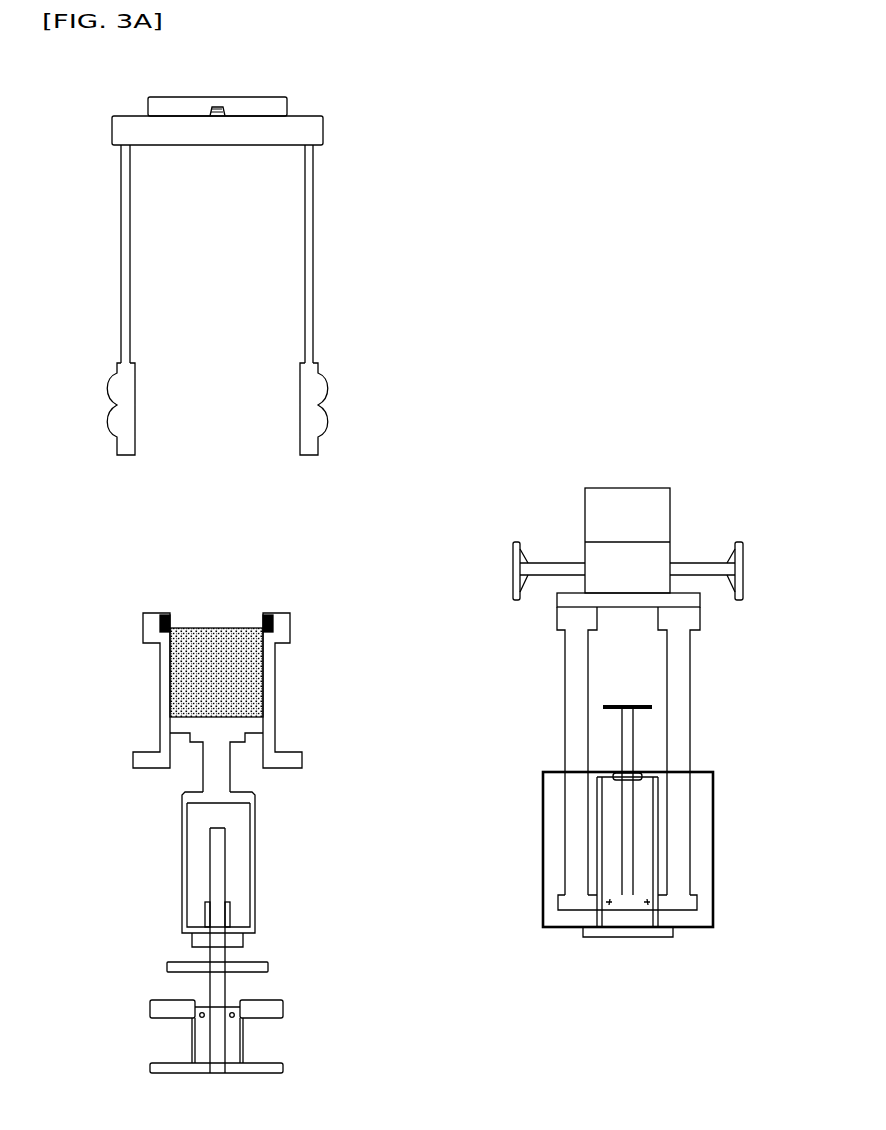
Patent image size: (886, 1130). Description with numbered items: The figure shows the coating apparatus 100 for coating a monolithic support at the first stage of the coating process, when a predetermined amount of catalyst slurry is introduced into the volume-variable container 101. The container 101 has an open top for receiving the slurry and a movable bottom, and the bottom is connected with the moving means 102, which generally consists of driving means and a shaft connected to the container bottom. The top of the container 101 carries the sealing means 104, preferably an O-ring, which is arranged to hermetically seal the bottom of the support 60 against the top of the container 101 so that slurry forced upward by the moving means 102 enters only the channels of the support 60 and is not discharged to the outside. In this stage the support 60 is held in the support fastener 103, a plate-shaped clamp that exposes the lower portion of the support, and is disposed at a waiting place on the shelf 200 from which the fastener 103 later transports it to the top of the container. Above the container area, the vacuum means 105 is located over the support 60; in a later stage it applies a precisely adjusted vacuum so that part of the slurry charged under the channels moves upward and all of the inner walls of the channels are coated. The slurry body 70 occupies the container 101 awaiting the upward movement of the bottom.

The support 60 is at (657, 505).
The specimen 70 is at (180, 685).
The coating apparatus 100 is at (76, 597).
The volume-variable container 101 is at (275, 677).
The moving means 102 is at (255, 867).
The support fastener 103 is at (743, 568).
The sealing means 104 is at (272, 614).
The vacuum means 105 is at (313, 253).
The shelf 200 is at (713, 832).